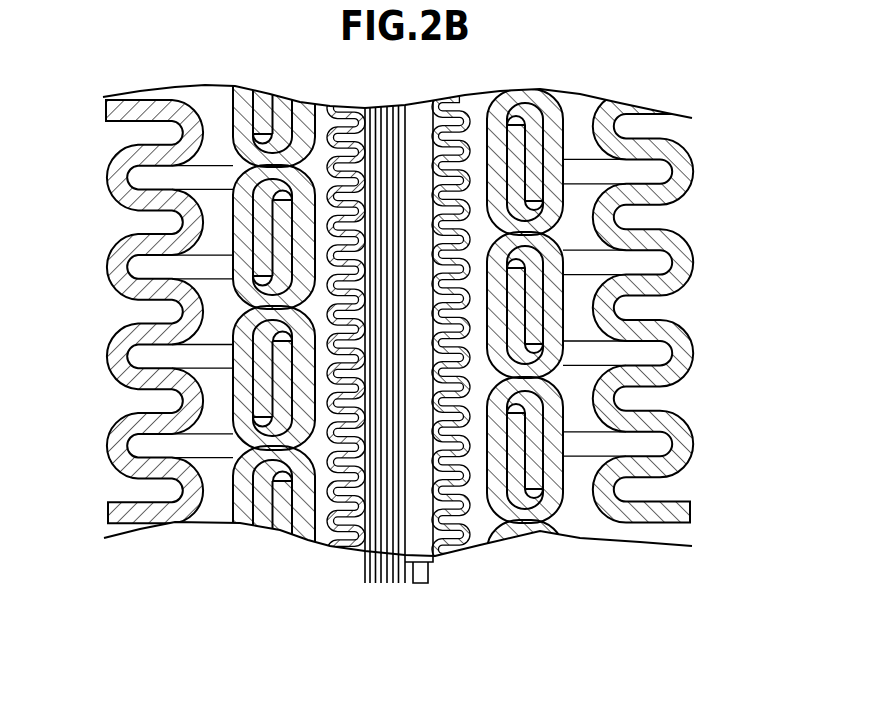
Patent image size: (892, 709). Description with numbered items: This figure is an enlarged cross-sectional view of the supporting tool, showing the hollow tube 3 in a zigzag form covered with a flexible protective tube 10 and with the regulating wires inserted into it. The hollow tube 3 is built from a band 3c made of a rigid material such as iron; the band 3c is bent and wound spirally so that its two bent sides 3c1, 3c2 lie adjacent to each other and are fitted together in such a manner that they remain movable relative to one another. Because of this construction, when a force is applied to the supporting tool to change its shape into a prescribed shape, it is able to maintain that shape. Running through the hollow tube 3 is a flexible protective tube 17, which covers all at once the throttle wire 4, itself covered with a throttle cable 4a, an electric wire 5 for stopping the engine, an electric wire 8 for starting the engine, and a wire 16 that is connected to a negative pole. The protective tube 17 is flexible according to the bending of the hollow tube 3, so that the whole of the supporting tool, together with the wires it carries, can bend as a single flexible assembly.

The hollow tube 3 is at (233, 228).
The band 3c is at (637, 377).
The bent side 3c1 is at (563, 170).
The bent side 3c2 is at (612, 118).
The throttle wire 4 is at (453, 369).
The throttle cable 4a is at (437, 556).
The electric wire for stopping the engine 5 is at (393, 585).
The electric wire for starting the engine 8 is at (366, 584).
The flexible protective tube 10 is at (102, 452).
The wire connected to a negative pole 16 is at (381, 587).
The flexible protective tube 17 is at (335, 533).